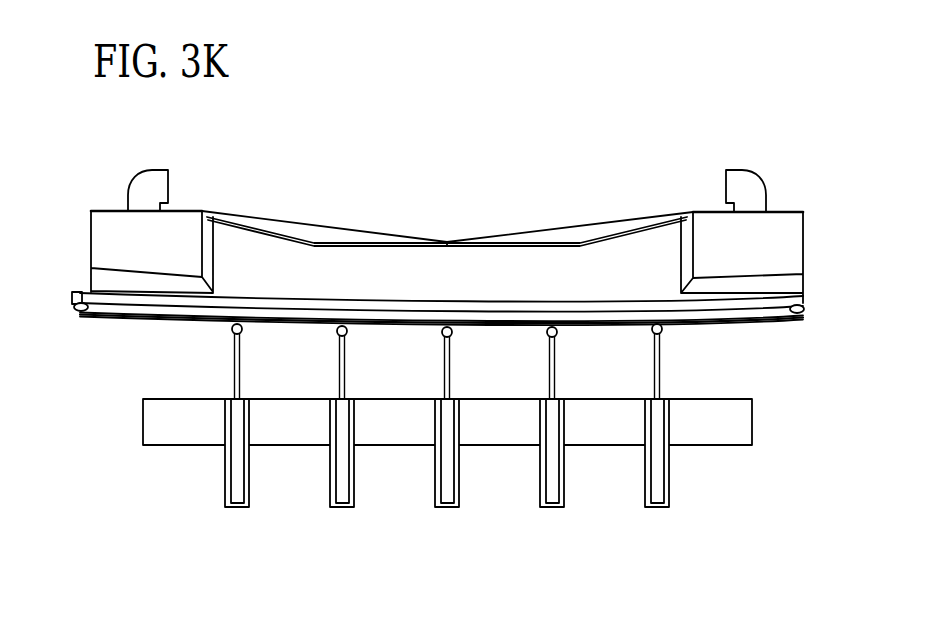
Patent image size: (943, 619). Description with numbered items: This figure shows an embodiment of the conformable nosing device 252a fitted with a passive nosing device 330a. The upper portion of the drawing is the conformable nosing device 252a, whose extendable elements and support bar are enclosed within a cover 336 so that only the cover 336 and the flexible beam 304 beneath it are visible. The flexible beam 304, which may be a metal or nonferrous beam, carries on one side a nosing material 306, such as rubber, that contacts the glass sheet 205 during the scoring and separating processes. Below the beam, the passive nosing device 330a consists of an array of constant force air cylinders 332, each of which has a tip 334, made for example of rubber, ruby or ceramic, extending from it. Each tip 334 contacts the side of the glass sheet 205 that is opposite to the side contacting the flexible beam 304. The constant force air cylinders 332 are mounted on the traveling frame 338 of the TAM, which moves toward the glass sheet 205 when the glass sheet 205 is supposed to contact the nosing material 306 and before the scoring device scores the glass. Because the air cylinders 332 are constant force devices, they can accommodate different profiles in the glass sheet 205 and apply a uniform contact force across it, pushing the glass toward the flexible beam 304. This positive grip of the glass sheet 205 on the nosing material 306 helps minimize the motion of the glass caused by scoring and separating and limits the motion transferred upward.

The conformable nosing device 252a is at (772, 155).
The cover 336 is at (652, 253).
The flexible beam 304 is at (80, 297).
The nosing material 306 is at (102, 310).
The glass sheet 205 is at (130, 315).
The tip 334 is at (338, 333).
The traveling frame 338 is at (692, 399).
The constant force air cylinders 332 is at (330, 472).
The passive nosing device 330a is at (780, 315).